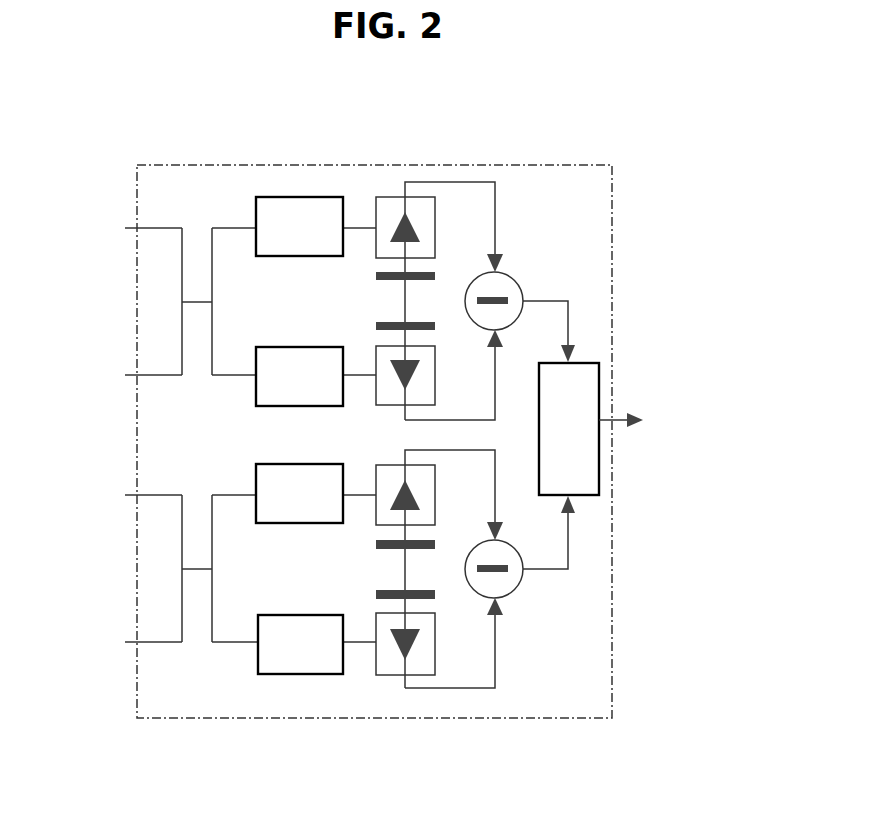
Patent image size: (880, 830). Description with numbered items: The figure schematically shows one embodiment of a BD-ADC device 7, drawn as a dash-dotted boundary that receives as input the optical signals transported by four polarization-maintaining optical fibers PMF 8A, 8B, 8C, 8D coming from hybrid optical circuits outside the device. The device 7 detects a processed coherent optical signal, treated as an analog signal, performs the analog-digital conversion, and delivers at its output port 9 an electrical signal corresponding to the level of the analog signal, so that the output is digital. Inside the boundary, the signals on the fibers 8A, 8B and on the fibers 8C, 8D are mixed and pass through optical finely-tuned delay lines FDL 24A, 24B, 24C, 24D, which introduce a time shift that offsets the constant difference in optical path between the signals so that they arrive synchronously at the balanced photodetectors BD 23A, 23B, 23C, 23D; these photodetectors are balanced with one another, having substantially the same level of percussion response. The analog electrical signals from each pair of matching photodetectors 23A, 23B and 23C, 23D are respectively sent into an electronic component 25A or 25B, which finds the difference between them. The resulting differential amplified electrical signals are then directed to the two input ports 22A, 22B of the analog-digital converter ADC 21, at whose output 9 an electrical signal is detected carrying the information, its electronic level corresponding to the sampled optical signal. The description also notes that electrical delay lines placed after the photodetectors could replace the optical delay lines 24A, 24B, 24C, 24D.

The BD-ADC device 7 is at (570, 152).
The optical fiber PMF 8A is at (132, 230).
The optical fiber PMF 8B is at (130, 377).
The optical fiber PMF 8C is at (130, 498).
The optical fiber PMF 8D is at (130, 648).
The output port 9 is at (623, 417).
The analog-digital converter ADC 21 is at (592, 370).
The input port 22A is at (570, 310).
The input port 22B is at (568, 538).
The balanced photodetector BD 23A is at (428, 213).
The balanced photodetector BD 23B is at (383, 357).
The balanced photodetector BD 23C is at (382, 513).
The balanced photodetector BD 23D is at (428, 663).
The optical finely-tuned delay line FDL 24A is at (295, 212).
The optical finely-tuned delay line FDL 24B is at (273, 360).
The optical finely-tuned delay line FDL 24C is at (267, 508).
The optical finely-tuned delay line FDL 24D is at (298, 663).
The electronic component 25A is at (505, 282).
The electronic component 25B is at (507, 585).